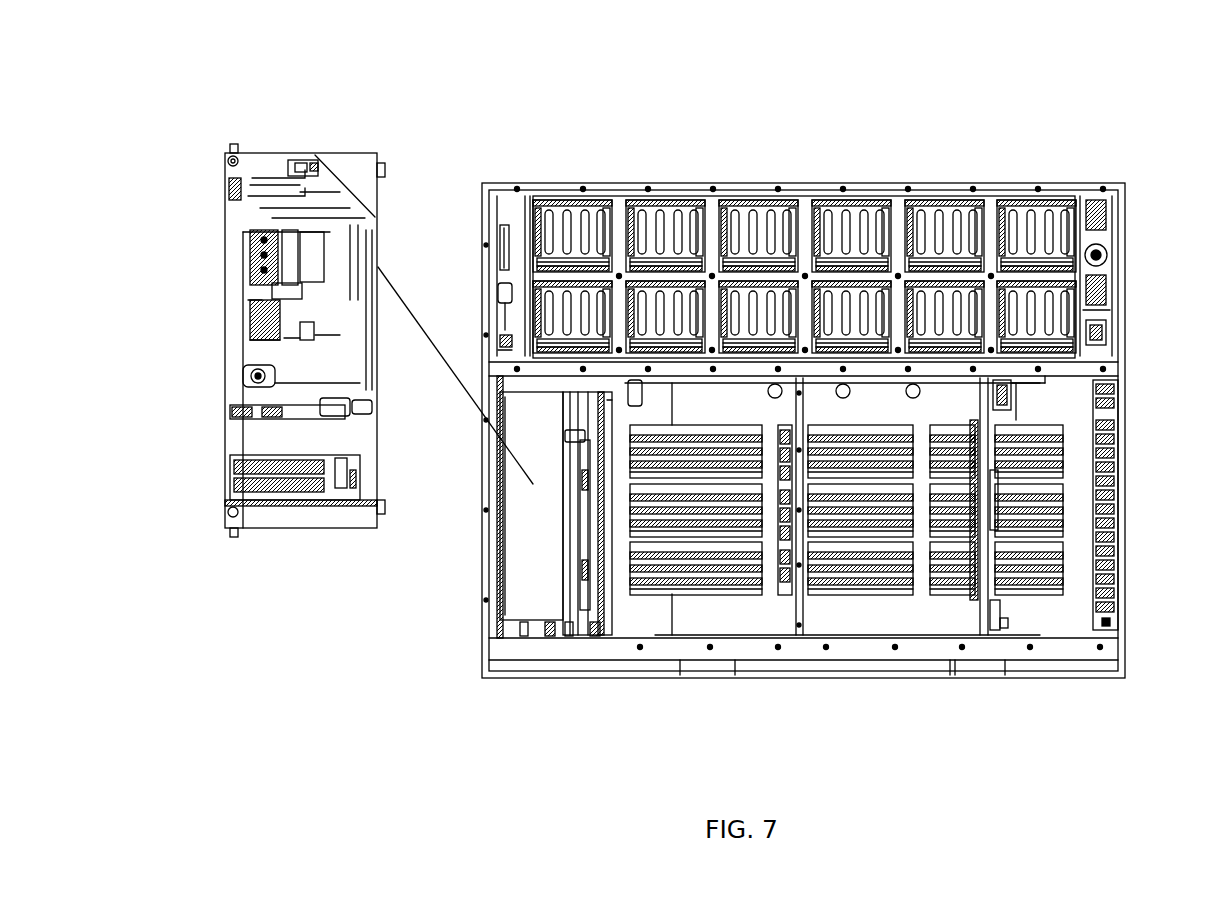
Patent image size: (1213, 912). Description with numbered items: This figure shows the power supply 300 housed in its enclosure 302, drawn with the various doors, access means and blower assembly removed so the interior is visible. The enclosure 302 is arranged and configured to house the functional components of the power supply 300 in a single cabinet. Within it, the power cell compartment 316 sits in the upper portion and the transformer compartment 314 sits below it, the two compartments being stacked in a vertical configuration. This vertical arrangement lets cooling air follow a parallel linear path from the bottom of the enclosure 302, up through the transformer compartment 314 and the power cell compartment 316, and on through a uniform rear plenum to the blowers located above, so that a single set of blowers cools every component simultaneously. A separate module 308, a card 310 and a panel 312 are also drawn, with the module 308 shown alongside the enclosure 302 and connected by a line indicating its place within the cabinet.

The power supply 300 is at (1172, 100).
The enclosure 302 is at (1125, 206).
The control module 308 is at (192, 208).
The vertical card 310 is at (600, 632).
The left panel 312 is at (568, 632).
The transformer compartment 314 is at (903, 625).
The power cell compartment 316 is at (1062, 183).